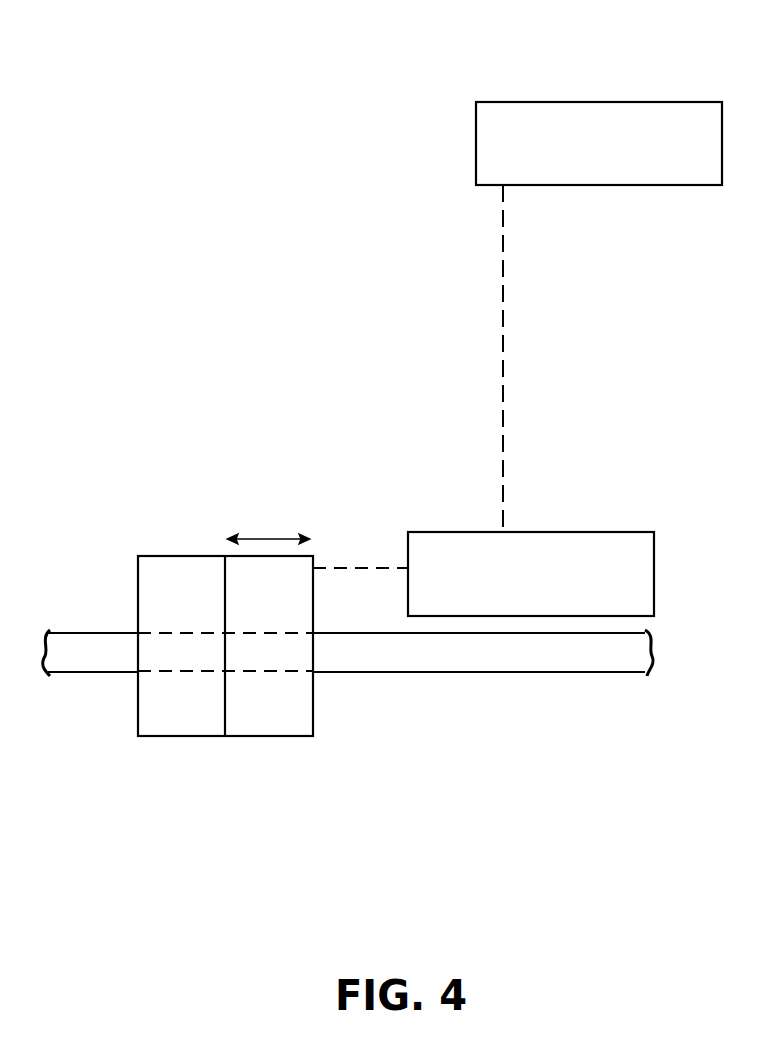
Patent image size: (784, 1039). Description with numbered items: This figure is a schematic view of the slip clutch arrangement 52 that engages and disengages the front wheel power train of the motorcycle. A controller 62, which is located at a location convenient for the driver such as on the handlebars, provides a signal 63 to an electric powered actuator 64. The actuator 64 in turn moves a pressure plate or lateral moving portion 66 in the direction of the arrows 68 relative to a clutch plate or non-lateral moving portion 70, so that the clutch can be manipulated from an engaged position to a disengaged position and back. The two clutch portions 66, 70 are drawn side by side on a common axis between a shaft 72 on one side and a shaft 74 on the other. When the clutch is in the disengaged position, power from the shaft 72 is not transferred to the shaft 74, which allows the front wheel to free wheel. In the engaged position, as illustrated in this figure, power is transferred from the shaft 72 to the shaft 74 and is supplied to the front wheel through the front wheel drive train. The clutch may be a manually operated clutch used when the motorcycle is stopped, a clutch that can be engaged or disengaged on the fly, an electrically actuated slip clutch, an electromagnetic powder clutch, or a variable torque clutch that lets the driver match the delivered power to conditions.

The sensor assembly 52 is at (253, 764).
The controller 62 is at (594, 101).
The signal 63 is at (504, 369).
The electric powered actuator 64 is at (655, 563).
The lateral moving portion 66 is at (293, 596).
The arrows 68 is at (265, 537).
The non-lateral moving portion 70 is at (157, 570).
The shaft 72 is at (88, 676).
The shaft 74 is at (425, 657).